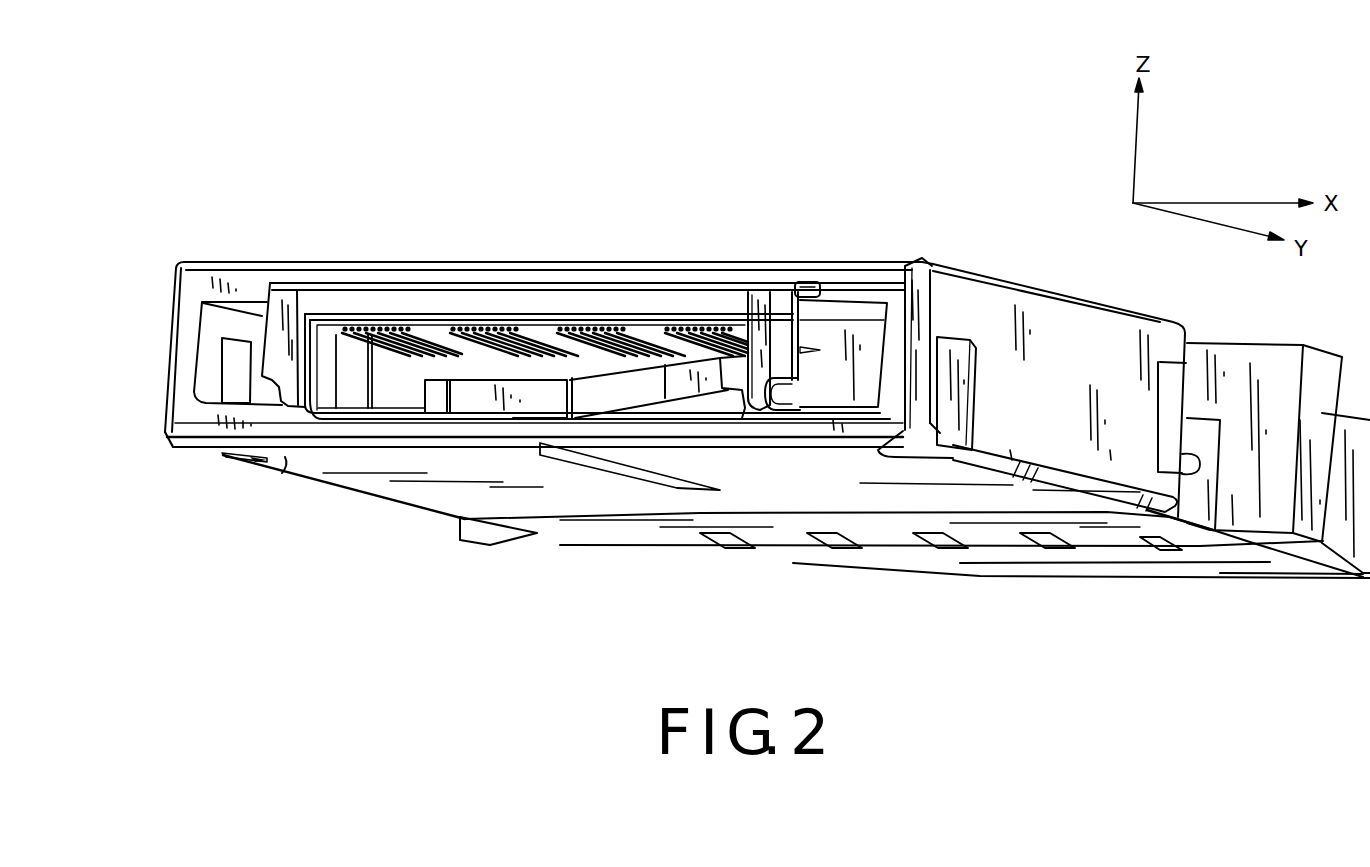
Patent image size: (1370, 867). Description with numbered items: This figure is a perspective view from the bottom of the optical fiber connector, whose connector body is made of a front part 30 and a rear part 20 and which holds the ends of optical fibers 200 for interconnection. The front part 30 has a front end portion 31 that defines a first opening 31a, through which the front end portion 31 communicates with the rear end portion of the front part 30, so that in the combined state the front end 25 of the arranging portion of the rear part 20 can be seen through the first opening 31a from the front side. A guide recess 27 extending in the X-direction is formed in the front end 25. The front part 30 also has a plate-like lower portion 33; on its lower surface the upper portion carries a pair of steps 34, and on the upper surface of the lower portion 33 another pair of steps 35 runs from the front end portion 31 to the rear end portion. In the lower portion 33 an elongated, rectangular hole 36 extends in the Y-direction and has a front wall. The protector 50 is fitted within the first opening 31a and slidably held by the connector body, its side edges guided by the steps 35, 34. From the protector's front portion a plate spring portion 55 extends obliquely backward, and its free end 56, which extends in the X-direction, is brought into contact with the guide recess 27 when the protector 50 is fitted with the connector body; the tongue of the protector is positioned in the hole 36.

The rear part 20 is at (1093, 530).
The front end 25 is at (388, 398).
The guide recess 27 is at (441, 399).
The front part 30 is at (240, 259).
The front end portion 31 is at (180, 406).
The first opening 31a is at (217, 322).
The lower portion 33 is at (282, 473).
The steps 34 is at (788, 296).
The steps 35 is at (773, 411).
The rectangular hole 36 is at (640, 473).
The protector 50 is at (293, 305).
The plate spring portion 55 is at (650, 390).
The free end 56 is at (479, 399).
The optical fibers 200 is at (427, 330).